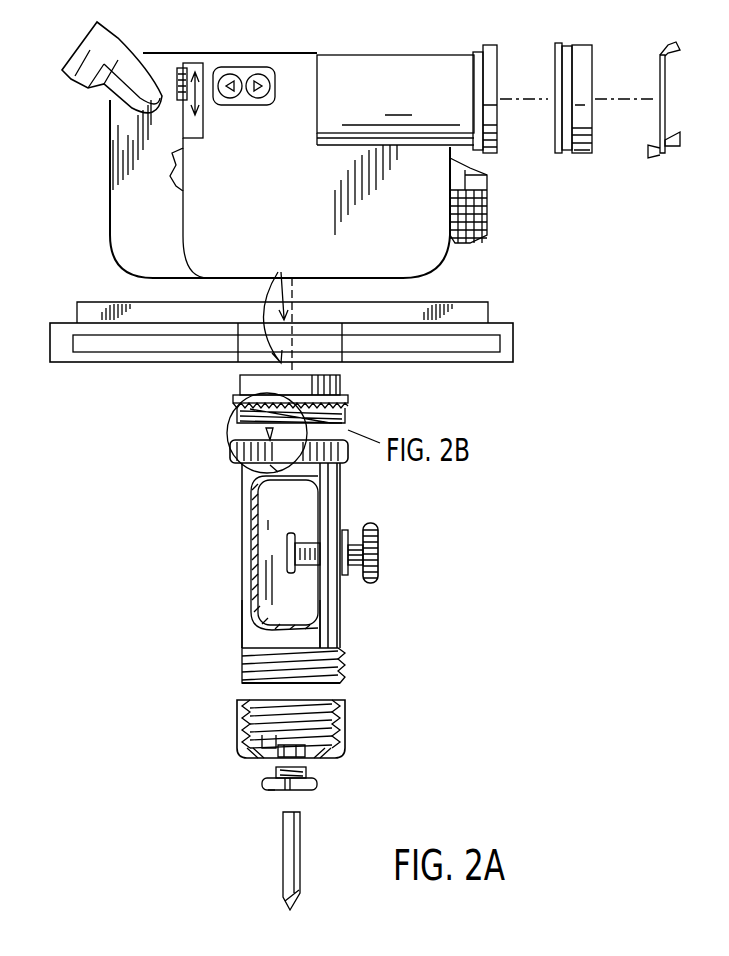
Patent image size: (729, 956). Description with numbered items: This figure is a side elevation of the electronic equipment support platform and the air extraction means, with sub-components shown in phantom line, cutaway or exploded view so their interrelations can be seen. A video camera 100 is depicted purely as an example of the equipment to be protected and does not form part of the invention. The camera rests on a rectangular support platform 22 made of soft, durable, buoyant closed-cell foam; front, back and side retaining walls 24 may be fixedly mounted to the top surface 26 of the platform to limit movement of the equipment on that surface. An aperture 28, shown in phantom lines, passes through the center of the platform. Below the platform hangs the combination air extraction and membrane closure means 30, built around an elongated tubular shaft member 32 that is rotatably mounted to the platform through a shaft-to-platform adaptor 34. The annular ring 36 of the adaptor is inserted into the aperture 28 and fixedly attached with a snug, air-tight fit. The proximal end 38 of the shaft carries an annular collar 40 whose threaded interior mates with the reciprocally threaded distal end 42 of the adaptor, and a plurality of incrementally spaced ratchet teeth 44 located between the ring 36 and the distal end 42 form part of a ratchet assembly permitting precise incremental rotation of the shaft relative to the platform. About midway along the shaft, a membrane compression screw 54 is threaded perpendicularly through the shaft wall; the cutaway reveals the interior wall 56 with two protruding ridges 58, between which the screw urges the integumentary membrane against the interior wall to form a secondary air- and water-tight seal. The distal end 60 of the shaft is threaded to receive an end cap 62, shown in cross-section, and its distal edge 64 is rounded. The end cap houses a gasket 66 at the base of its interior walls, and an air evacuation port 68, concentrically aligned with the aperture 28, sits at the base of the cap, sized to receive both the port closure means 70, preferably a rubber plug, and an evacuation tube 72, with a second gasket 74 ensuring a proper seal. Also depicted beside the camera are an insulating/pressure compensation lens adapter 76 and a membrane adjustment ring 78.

The video camera 100 is at (108, 229).
The rectangular support platform 22 is at (517, 344).
The retaining walls 24 is at (473, 303).
The top surface 26 is at (510, 312).
The aperture 28 is at (280, 304).
The combination air extraction and membrane closure means 30 is at (270, 912).
The elongated tubular shaft member 32 is at (340, 616).
The shaft-to-platform adaptor 34 is at (222, 376).
The annular ring 36 is at (338, 385).
The proximal end 38 is at (348, 488).
The annular collar 40 is at (238, 452).
The distal end 42 is at (345, 413).
The ratchet teeth 44 is at (347, 393).
The membrane compression screw 54 is at (378, 552).
The interior wall 56 is at (270, 510).
The protruding ridges 58 is at (260, 575).
The distal end 60 is at (343, 656).
The end cap 62 is at (345, 719).
The distal edge 64 is at (340, 682).
The gasket 66 is at (248, 758).
The air evacuation port 68 is at (303, 778).
The port closure means 70 is at (285, 792).
The evacuation tube 72 is at (300, 846).
The second gasket 74 is at (275, 772).
The insulating/pressure compensation lens adapter 76 is at (585, 153).
The membrane adjustment ring 78 is at (667, 153).